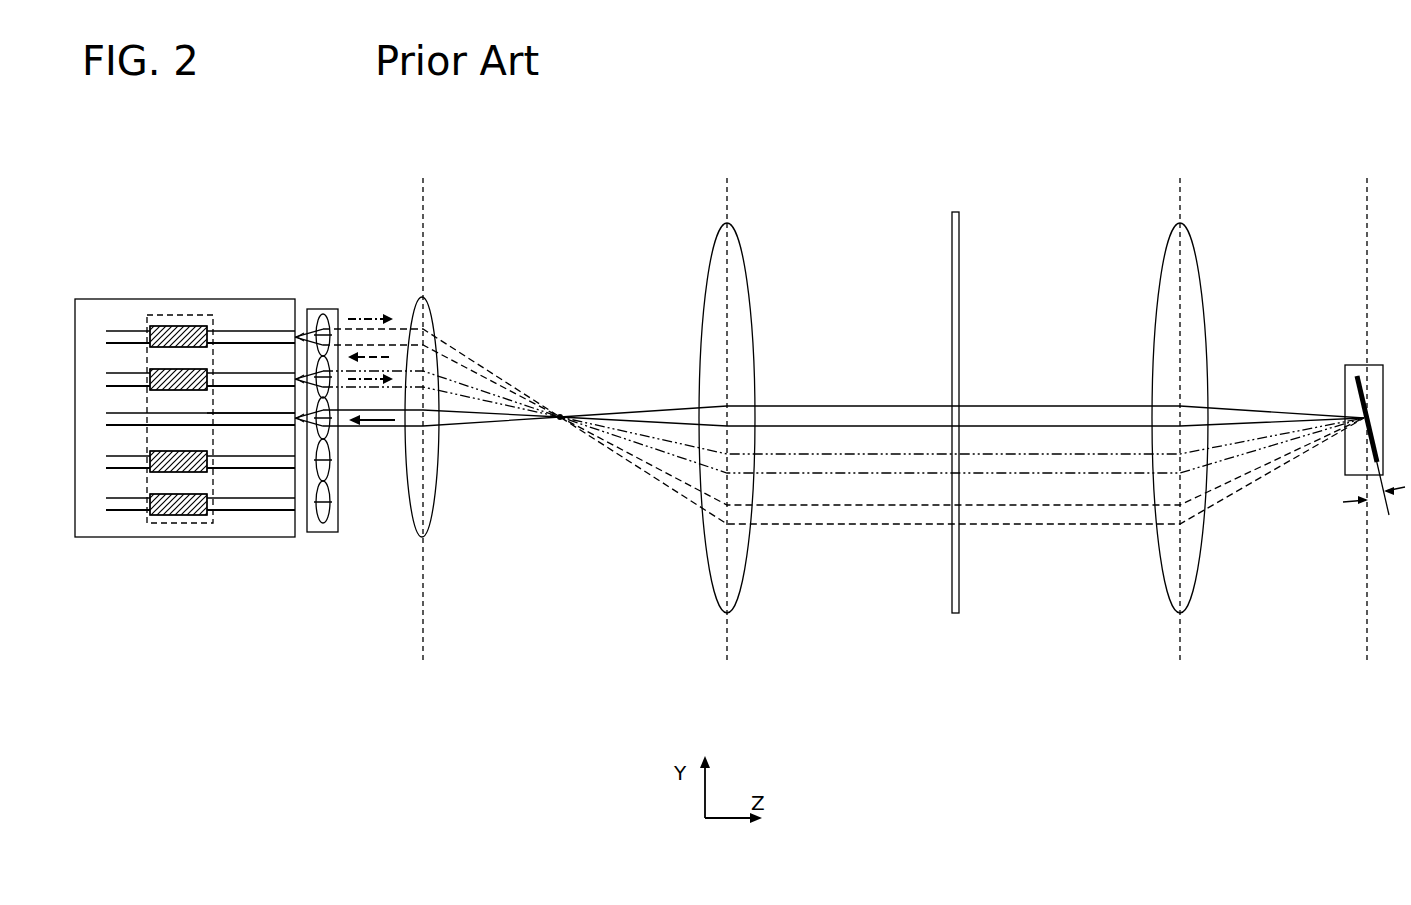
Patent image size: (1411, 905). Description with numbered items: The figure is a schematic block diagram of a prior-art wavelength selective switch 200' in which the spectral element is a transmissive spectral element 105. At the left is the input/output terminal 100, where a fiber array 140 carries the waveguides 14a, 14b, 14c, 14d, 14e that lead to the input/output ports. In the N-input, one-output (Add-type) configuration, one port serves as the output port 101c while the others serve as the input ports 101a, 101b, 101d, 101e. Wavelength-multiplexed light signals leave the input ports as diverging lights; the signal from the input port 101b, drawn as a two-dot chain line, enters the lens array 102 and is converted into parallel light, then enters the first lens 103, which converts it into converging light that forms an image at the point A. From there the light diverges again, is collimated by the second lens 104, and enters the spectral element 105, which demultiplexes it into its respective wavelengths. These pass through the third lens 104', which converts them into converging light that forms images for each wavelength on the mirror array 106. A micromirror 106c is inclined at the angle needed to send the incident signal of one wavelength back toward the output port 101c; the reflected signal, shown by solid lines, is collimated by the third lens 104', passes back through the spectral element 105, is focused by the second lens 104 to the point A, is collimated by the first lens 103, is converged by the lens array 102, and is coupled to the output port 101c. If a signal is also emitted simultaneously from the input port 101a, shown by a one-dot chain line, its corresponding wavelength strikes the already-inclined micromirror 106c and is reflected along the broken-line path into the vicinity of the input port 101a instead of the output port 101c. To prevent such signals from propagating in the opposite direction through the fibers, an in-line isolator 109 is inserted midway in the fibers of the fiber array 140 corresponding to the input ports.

The wavelength selective switch 200' is at (814, 99).
The input/output terminal 100 is at (194, 433).
The fiber array 140 is at (273, 299).
The in-line isolator 109 is at (186, 530).
The waveguide 14a is at (126, 331).
The waveguide 14b is at (126, 373).
The waveguide 14c is at (126, 413).
The waveguide 14d is at (126, 456).
The waveguide 14e is at (126, 498).
The input port 101a is at (292, 333).
The input port 101b is at (292, 375).
The output port 101c is at (292, 416).
The input port 101d is at (292, 459).
The input port 101e is at (292, 501).
The lens array 102 is at (331, 309).
The first lens 103 is at (411, 314).
The point A is at (563, 410).
The second lens 104 is at (744, 404).
The spectral element 105 is at (952, 218).
The third lens 104' is at (1199, 404).
The mirror array 106 is at (1357, 364).
The micromirror 106c is at (1355, 377).